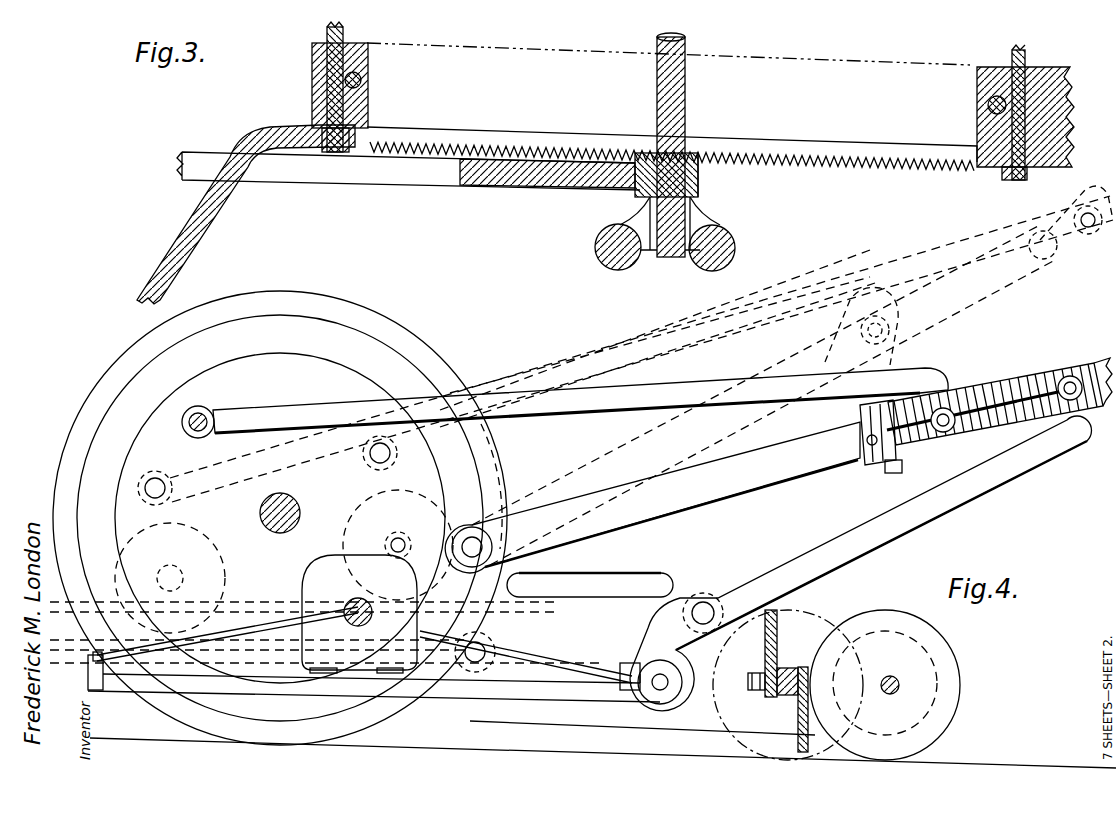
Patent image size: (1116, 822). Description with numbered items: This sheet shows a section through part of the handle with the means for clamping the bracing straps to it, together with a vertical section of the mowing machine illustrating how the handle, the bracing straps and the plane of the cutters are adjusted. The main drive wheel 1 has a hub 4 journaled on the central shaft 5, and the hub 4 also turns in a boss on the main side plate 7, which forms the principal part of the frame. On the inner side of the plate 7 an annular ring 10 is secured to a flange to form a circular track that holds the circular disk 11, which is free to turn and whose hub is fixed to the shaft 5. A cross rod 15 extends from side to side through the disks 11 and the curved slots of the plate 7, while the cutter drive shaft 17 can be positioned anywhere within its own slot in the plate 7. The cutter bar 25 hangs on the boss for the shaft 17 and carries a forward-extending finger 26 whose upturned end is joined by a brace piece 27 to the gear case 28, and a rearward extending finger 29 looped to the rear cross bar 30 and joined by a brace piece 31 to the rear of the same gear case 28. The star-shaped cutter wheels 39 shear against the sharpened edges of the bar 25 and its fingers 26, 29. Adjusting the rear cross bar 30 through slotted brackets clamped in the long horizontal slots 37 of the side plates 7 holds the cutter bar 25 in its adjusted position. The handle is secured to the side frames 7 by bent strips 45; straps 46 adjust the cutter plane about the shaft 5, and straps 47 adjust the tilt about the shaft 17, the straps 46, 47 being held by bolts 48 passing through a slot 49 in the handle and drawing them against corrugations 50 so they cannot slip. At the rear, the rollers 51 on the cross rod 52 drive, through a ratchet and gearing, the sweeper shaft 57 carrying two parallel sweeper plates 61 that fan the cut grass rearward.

In FIG. 4, the main drive wheel 1 is at (367, 318).
In FIG. 3, the hub 4 is at (1065, 100).
In FIG. 4, the central shaft 5 is at (300, 508).
In FIG. 4, the main side plate 7 is at (506, 486).
In FIG. 4, the annular ring 10 is at (242, 332).
In FIG. 4, the circular disk 11 is at (280, 518).
In FIG. 4, the cross rod 15 is at (205, 410).
In FIG. 4, the cutter drive shaft 17 is at (200, 572).
In FIG. 4, the cutter bar 25 is at (355, 693).
In FIG. 4, the forward-extending finger 26 is at (102, 690).
In FIG. 4, the brace piece 27 is at (200, 654).
In FIG. 4, the gear case 28 is at (376, 605).
In FIG. 4, the rearward extending finger 29 is at (624, 692).
In FIG. 4, the rear cross bar 30 is at (720, 611).
In FIG. 4, the brace piece 31 is at (526, 657).
In FIG. 4, the slot 37 is at (630, 573).
In FIG. 4, the cutter wheel 39 is at (500, 686).
In FIG. 3, the bent strip 45 is at (208, 230).
In FIG. 4, the bent strip 45 is at (776, 379).
In FIG. 4, the strap 46 is at (641, 349).
In FIG. 3, the strap 47 is at (352, 165).
In FIG. 4, the strap 47 is at (898, 506).
In FIG. 3, the bolt 48 is at (686, 96).
In FIG. 4, the bolt 48 is at (977, 410).
In FIG. 3, the slot 49 is at (672, 132).
In FIG. 4, the slot 49 is at (1005, 398).
In FIG. 3, the corrugations 50 is at (768, 160).
In FIG. 4, the corrugations 50 is at (988, 432).
In FIG. 4, the rear roller 51 is at (957, 660).
In FIG. 4, the cross rod 52 is at (900, 686).
In FIG. 4, the sweeper shaft 57 is at (790, 668).
In FIG. 4, the sweeper plate 61 is at (765, 645).